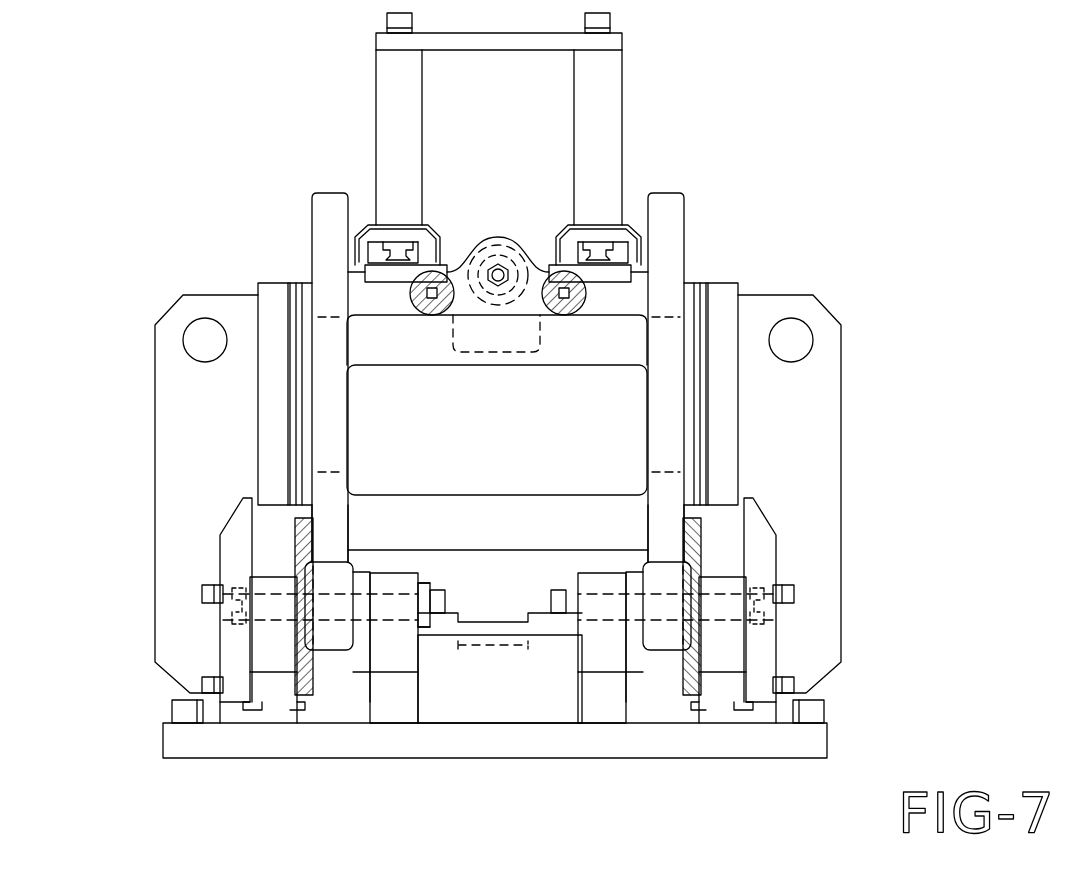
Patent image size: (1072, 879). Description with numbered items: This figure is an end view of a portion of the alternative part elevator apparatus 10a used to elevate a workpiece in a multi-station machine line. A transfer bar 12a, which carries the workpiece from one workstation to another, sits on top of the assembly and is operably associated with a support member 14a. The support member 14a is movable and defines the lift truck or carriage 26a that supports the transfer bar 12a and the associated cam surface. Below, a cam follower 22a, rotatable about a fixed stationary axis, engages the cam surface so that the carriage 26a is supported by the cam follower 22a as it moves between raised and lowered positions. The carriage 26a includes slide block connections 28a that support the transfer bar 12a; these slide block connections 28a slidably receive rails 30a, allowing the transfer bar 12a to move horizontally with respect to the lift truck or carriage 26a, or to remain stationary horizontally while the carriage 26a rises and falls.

The alternative part elevator apparatus 10a is at (850, 275).
The transfer bar 12a is at (607, 83).
The support member 14a is at (668, 418).
The cam follower 22a is at (338, 657).
The lift truck or carriage 26a is at (332, 292).
The slide block connection 28a is at (372, 268).
The rail 30a is at (385, 232).